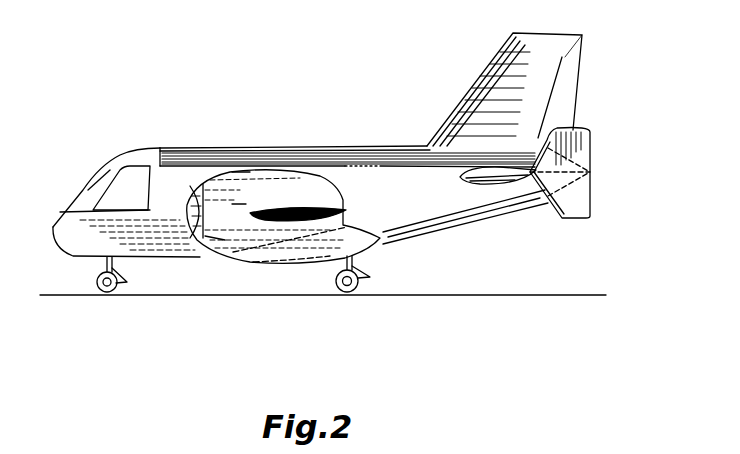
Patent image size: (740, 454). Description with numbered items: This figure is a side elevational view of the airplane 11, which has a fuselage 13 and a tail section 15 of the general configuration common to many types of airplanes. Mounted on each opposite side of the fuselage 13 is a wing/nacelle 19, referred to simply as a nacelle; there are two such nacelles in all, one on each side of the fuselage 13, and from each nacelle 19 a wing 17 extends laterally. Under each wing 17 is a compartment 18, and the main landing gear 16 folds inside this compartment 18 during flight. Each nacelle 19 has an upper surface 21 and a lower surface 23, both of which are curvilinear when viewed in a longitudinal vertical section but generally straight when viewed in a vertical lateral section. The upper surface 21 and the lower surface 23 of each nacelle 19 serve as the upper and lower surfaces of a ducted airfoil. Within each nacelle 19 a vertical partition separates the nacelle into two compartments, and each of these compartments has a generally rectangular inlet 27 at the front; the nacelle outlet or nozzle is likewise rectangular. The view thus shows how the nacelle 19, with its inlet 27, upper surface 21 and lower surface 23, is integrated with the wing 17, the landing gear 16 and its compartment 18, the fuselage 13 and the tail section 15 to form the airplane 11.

The airplane 11 is at (118, 110).
The fuselage 13 is at (327, 146).
The tail section 15 is at (582, 148).
The main landing gear 16 is at (360, 290).
The wing 17 is at (275, 207).
The compartment 18 is at (300, 253).
The wing/nacelle 19 is at (238, 204).
The upper surface 21 is at (241, 172).
The lower surface 23 is at (214, 238).
The inlet 27 is at (192, 210).